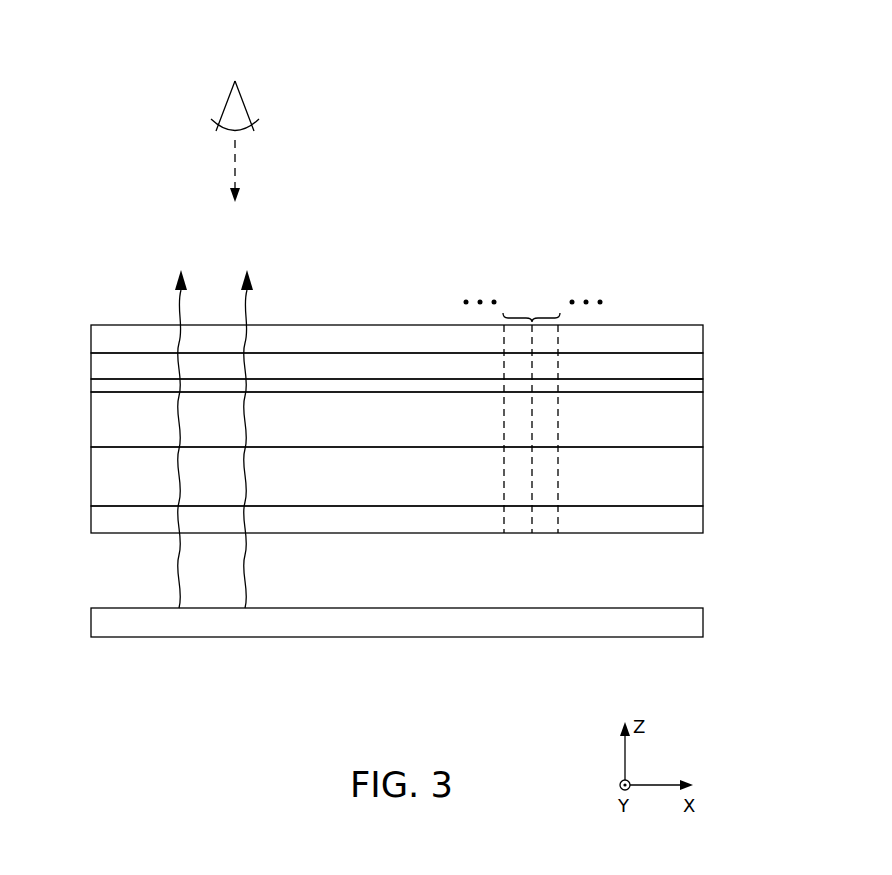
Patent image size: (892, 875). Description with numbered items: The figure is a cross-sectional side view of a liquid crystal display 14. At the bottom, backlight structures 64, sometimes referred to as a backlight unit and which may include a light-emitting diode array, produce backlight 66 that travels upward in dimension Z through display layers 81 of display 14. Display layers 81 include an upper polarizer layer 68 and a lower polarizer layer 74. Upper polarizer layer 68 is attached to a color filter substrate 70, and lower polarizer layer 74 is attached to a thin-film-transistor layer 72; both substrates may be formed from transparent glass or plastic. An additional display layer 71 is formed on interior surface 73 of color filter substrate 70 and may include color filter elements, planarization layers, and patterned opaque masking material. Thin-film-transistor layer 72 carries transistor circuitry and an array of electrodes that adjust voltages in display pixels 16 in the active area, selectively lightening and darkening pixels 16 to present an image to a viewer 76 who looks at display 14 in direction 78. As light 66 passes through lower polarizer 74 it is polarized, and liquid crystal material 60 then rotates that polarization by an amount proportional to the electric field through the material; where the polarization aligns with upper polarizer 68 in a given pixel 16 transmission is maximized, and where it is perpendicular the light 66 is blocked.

The display 14 is at (448, 455).
The display pixels 16 is at (520, 314).
The liquid crystal material 60 is at (98, 418).
The backlight structures 64 is at (422, 624).
The backlight 66 is at (175, 560).
The upper polarizer layer 68 is at (98, 339).
The color filter substrate 70 is at (98, 363).
The display layer 71 is at (98, 387).
The thin-film-transistor layer 72 is at (98, 473).
The interior surface 73 is at (678, 381).
The lower polarizer layer 74 is at (98, 519).
The viewer 76 is at (246, 104).
The viewing direction 78 is at (237, 175).
The display layers 81 is at (417, 402).